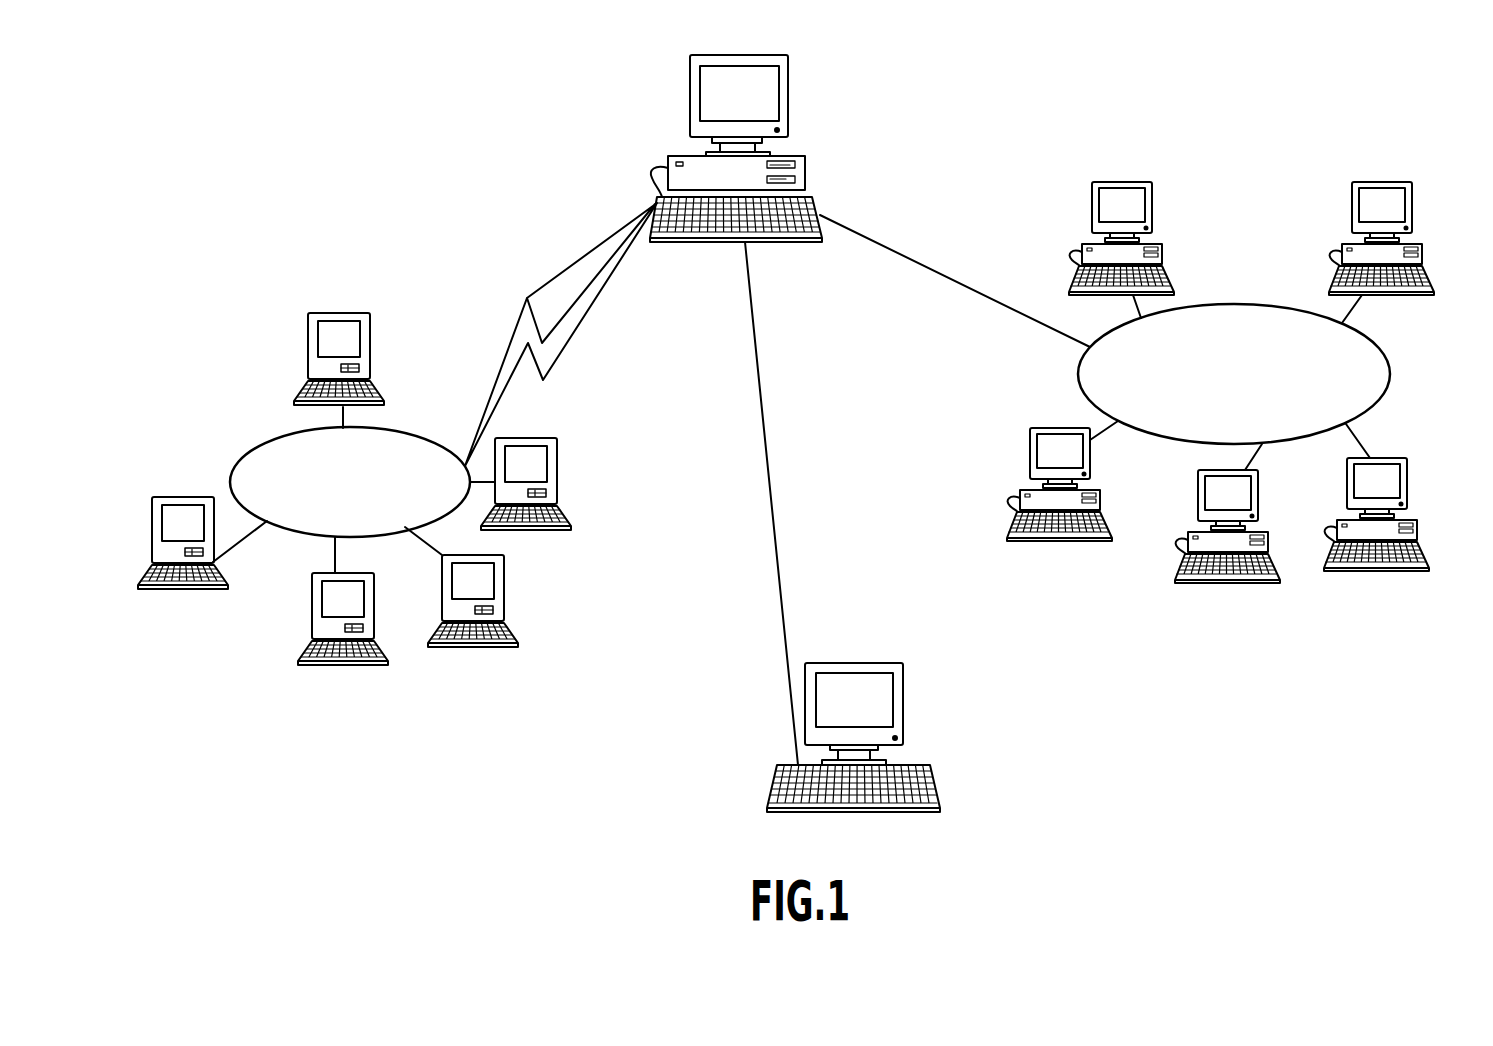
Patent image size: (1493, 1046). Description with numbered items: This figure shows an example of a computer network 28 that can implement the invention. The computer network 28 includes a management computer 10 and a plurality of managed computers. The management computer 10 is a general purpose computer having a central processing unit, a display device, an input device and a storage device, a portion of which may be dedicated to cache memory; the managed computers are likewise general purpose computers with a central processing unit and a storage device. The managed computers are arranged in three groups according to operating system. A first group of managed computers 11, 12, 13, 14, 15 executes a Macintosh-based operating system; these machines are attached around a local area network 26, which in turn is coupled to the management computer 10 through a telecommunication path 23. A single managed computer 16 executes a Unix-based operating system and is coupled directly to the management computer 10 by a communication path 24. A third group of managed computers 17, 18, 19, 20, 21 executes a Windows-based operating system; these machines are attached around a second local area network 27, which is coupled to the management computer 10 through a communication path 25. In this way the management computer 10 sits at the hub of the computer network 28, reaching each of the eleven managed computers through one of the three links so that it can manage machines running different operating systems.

The management computer 10 is at (806, 162).
The managed computer 11 is at (372, 340).
The managed computer 12 is at (183, 497).
The managed computer 13 is at (312, 612).
The managed computer 14 is at (500, 585).
The managed computer 15 is at (557, 462).
The managed computer 16 is at (905, 700).
The managed computer 17 is at (1030, 448).
The managed computer 18 is at (1198, 497).
The managed computer 19 is at (1408, 480).
The managed computer 20 is at (1383, 182).
The managed computer 21 is at (1125, 182).
The telecommunication path 23 is at (570, 340).
The communication path 24 is at (776, 485).
The communication path 25 is at (928, 270).
The local area network 26 is at (252, 453).
The local area network 27 is at (1243, 305).
The computer network 28 is at (1030, 650).